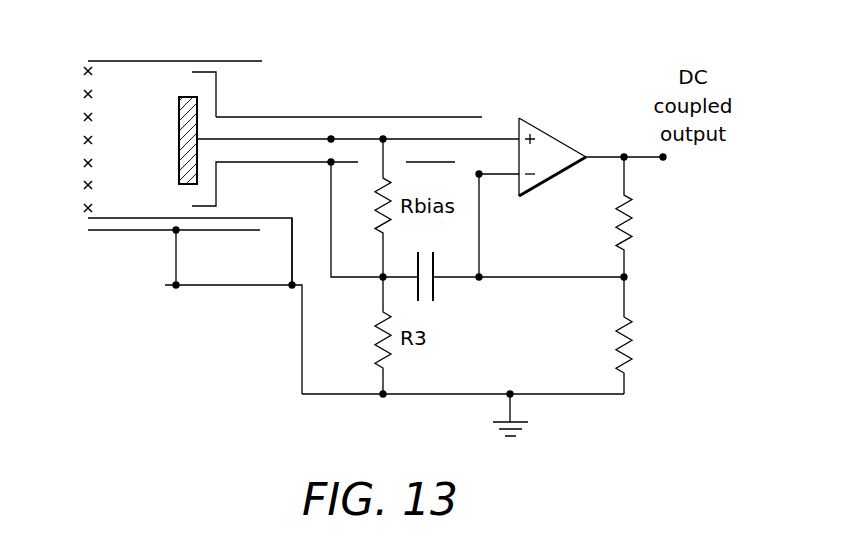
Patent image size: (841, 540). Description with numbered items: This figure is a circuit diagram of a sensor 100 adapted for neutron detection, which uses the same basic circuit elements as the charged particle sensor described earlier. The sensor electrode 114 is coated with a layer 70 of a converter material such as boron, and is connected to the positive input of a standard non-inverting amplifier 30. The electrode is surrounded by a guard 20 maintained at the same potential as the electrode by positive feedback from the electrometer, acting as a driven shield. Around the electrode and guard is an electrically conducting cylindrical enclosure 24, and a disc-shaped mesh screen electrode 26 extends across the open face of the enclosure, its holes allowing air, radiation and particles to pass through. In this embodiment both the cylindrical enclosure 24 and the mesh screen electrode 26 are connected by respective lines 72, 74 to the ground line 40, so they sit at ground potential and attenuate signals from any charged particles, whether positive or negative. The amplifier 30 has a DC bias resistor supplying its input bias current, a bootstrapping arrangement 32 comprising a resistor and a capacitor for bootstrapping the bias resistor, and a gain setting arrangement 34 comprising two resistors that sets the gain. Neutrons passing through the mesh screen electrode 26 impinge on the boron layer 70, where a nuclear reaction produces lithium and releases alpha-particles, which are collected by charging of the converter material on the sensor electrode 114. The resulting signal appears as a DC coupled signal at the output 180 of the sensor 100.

The guard 20 is at (414, 113).
The cylindrical enclosure 24 is at (133, 58).
The mesh screen electrode 26 is at (84, 140).
The non-inverting amplifier 30 is at (548, 128).
The bootstrapping arrangement 32 is at (431, 313).
The gain setting arrangement 34 is at (650, 287).
The ground line 40 is at (325, 396).
The boron layer 70 is at (179, 104).
The line 72 is at (176, 258).
The line 74 is at (292, 256).
The sensor 100 is at (159, 318).
The sensor electrode 114 is at (198, 110).
The output 180 is at (663, 157).